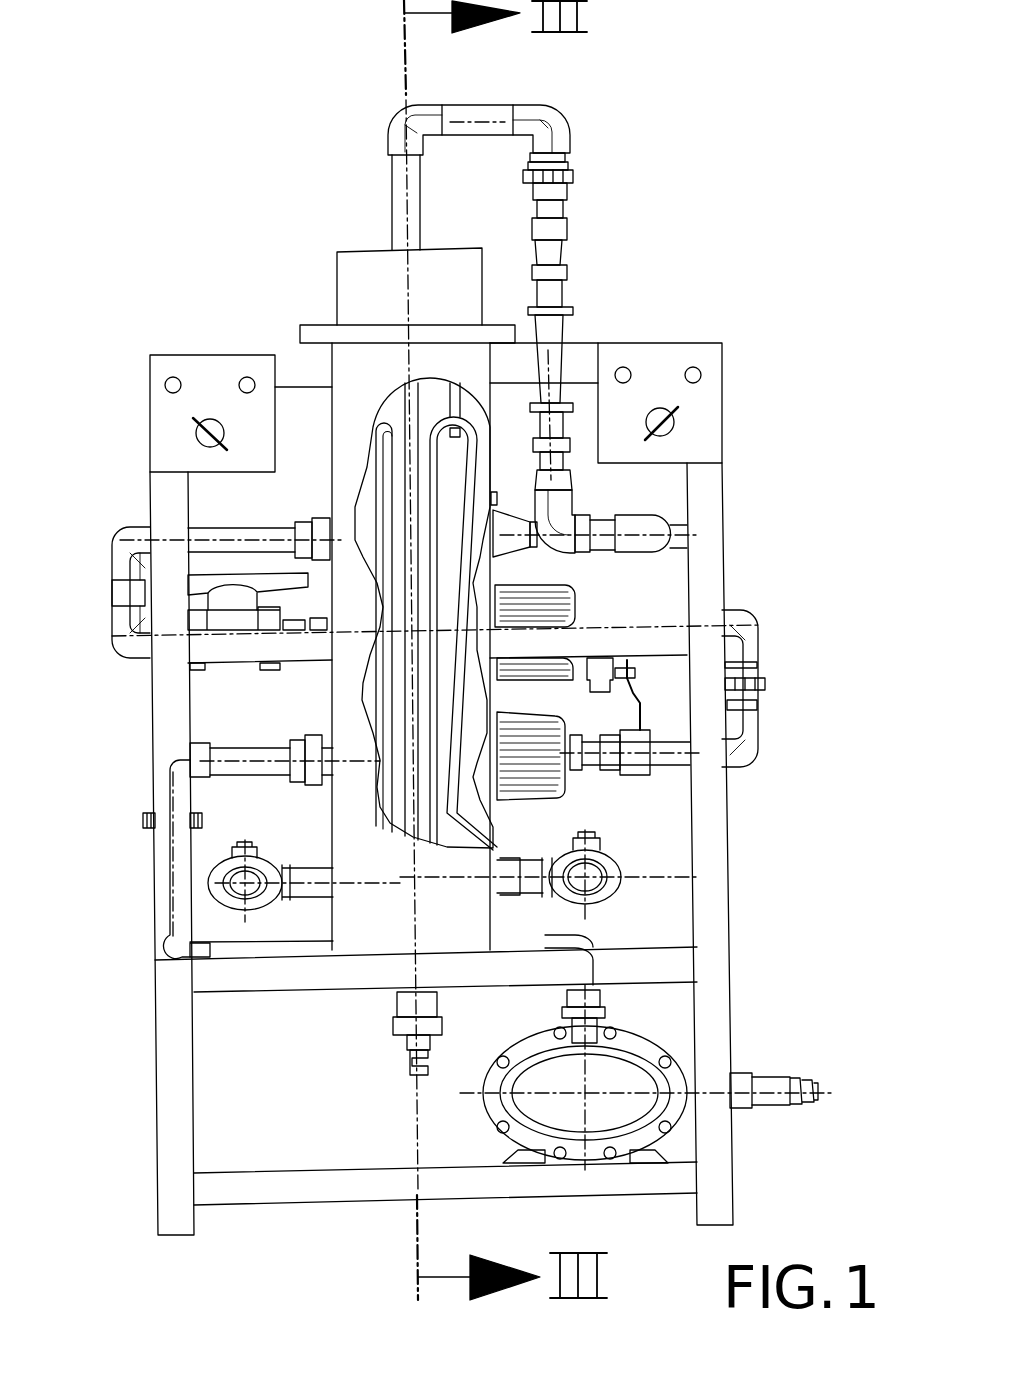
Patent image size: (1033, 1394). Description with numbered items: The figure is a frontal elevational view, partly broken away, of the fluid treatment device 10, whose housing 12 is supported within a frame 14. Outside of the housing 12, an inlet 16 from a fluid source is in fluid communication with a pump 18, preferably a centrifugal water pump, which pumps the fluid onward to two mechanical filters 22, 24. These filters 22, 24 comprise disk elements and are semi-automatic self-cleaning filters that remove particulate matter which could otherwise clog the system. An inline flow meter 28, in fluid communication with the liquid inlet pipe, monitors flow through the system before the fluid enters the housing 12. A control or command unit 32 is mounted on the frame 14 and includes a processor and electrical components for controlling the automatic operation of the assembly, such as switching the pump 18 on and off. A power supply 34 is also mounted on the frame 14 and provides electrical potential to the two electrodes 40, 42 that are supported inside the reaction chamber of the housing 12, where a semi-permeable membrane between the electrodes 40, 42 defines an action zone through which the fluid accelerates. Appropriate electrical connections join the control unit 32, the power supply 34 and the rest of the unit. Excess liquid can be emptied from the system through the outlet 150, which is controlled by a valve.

The ultraviolet water treatment system 10 is at (676, 270).
The housing 12 is at (312, 430).
The frame 14 is at (715, 885).
The inlet 16 is at (782, 1077).
The pump 18 is at (448, 1108).
The mechanical filter 22 is at (568, 790).
The mechanical filter 24 is at (576, 598).
The inline flow meter 28 is at (568, 328).
The control unit 32 is at (712, 434).
The power supply 34 is at (157, 398).
The electrode 40 is at (485, 568).
The electrode 42 is at (366, 513).
The outlet 150 is at (410, 1056).